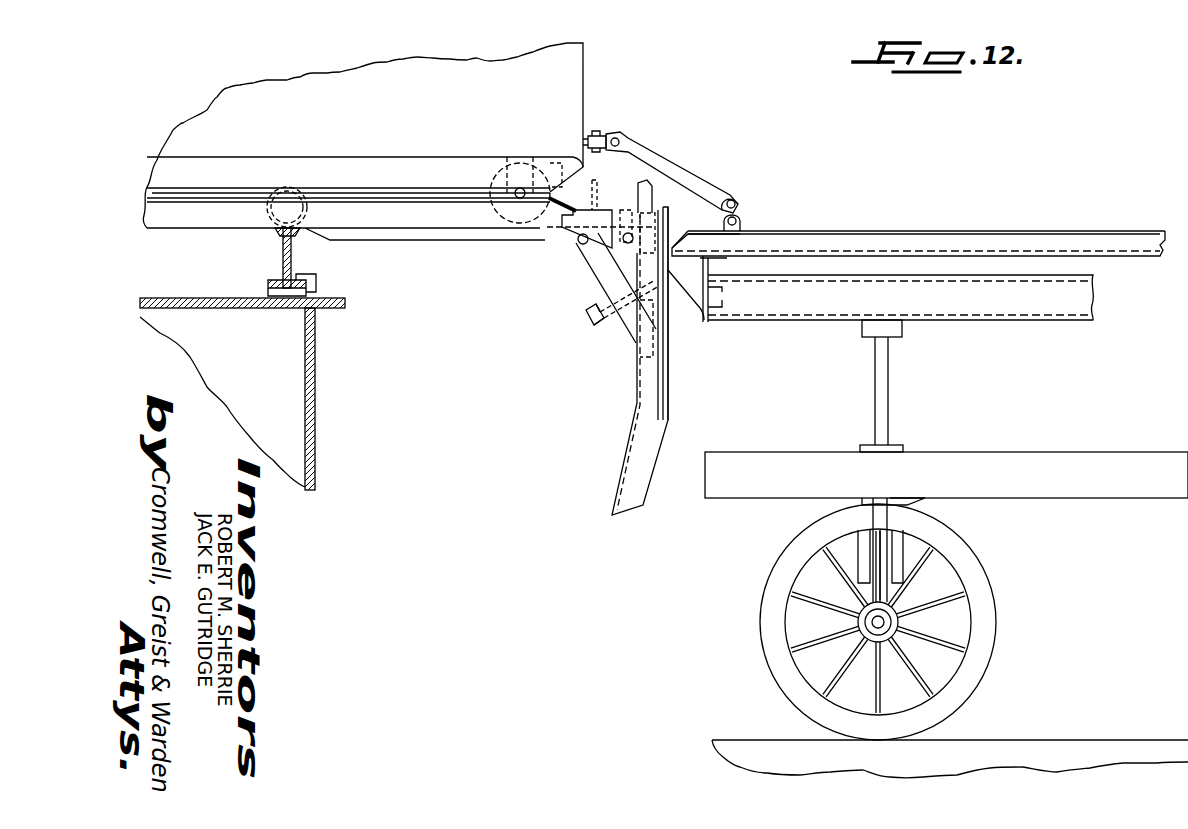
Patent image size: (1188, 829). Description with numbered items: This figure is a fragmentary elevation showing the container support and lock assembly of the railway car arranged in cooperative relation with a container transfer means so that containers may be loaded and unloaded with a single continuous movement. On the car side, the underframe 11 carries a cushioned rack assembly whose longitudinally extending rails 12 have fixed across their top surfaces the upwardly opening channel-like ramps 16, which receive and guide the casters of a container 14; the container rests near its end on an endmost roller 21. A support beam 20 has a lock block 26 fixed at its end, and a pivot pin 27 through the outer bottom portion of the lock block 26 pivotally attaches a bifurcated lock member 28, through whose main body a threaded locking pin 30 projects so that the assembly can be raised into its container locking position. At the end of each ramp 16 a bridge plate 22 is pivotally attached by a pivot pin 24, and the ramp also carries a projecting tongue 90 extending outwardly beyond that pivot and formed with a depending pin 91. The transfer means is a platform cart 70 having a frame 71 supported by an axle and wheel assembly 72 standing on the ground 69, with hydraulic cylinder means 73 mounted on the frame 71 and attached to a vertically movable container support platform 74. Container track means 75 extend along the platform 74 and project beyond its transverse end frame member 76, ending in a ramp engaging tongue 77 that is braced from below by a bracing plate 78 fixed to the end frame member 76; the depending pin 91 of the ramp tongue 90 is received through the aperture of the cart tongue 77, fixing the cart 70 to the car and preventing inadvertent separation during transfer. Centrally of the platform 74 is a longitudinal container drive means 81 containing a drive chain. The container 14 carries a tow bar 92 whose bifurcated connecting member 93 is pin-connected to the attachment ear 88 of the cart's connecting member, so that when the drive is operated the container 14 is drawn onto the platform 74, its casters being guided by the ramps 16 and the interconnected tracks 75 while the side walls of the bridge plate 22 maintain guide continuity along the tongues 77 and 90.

The underframe 11 is at (318, 342).
The rails 12 is at (280, 244).
The container 14 is at (386, 73).
The ramp 16 is at (373, 218).
The support beam 20 is at (526, 190).
The endmost roller 21 is at (302, 195).
The bridge plate 22 is at (633, 402).
The pivot pin 24 is at (626, 233).
The lock block 26 is at (592, 192).
The pivot pin 27 is at (576, 243).
The lock member 28 is at (604, 292).
The locking pin 30 is at (612, 320).
The ground 69 is at (747, 740).
The platform cart 70 is at (898, 224).
The frame 71 is at (1098, 455).
The axle and wheel assembly 72 is at (975, 560).
The hydraulic cylinder means 73 is at (890, 433).
The container support platform 74 is at (993, 322).
The container track means 75 is at (963, 243).
The transverse end frame member 76 is at (712, 295).
The tongue 77 is at (669, 263).
The bracing plate 78 is at (694, 307).
The container drive means 81 is at (818, 230).
The attachment ear 88 is at (743, 221).
The tongue 90 is at (655, 212).
The depending pin 91 is at (657, 228).
The tow bar 92 is at (663, 160).
The bifurcated connecting member 93 is at (731, 194).